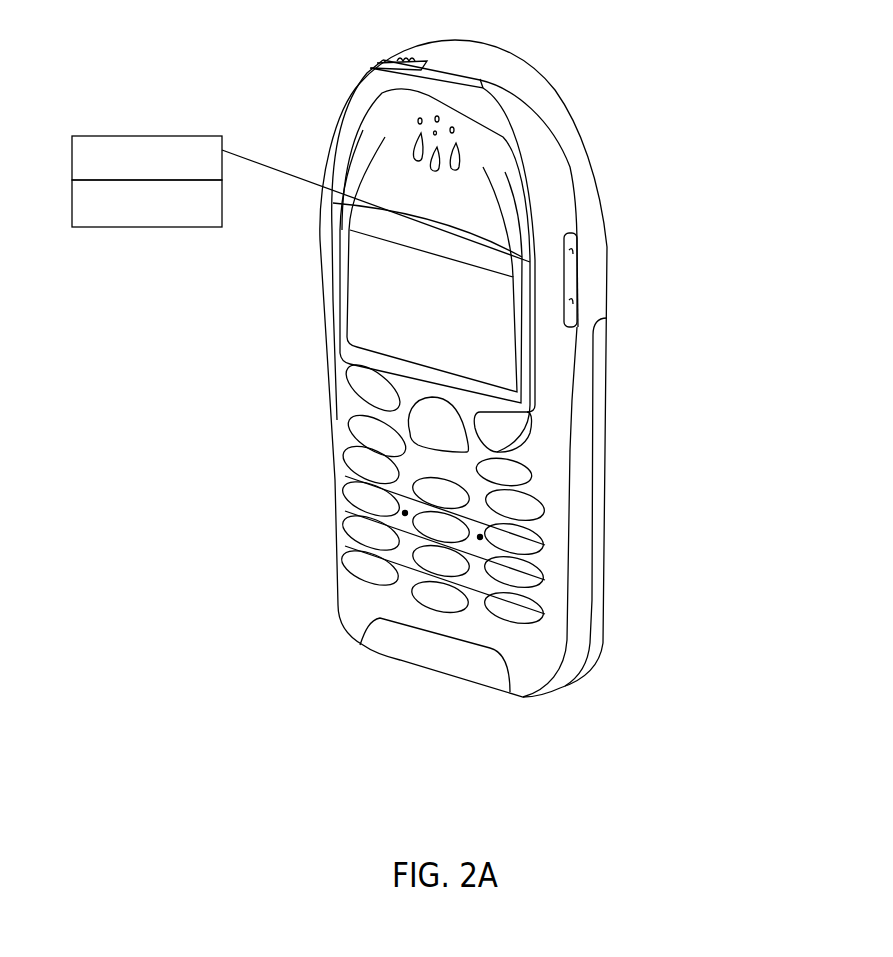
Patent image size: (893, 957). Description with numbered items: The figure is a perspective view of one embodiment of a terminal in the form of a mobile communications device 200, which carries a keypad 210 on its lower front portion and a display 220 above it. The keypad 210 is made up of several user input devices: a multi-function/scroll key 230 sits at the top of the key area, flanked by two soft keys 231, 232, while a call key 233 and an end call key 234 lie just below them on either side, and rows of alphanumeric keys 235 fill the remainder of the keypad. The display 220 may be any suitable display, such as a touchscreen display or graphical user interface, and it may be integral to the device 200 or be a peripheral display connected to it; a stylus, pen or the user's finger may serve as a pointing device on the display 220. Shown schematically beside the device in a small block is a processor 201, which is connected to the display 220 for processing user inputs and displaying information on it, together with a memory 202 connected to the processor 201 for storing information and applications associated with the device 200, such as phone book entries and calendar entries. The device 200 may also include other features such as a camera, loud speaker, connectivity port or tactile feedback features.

The mobile communications device 200 is at (565, 50).
The processor 201 is at (118, 136).
The memory 202 is at (117, 227).
The keypad 210 is at (530, 630).
The display 220 is at (485, 337).
The multi-function/scroll key 230 is at (447, 429).
The soft key 231 is at (373, 390).
The soft key 232 is at (510, 430).
The call key 233 is at (372, 430).
The end call key 234 is at (510, 472).
The alphanumeric keys 235 is at (370, 572).